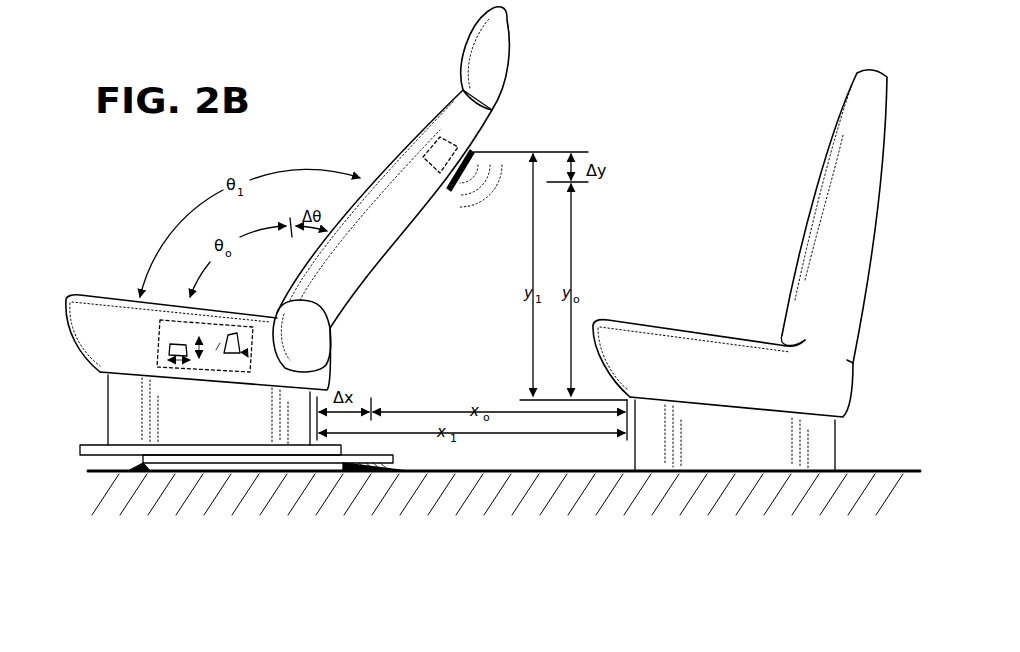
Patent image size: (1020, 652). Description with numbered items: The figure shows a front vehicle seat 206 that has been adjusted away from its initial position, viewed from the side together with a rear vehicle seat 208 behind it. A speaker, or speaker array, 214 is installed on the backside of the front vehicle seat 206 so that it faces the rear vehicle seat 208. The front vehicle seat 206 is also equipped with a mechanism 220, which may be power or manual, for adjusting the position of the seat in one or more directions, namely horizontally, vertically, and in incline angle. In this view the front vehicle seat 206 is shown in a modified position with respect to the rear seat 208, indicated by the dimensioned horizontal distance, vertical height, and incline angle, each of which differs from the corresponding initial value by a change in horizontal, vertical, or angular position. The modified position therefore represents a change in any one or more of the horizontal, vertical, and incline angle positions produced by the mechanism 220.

The front vehicle seat 206 is at (512, 62).
The rear vehicle seat 208 is at (882, 167).
The speaker 214 is at (457, 147).
The mechanism 220 is at (200, 377).